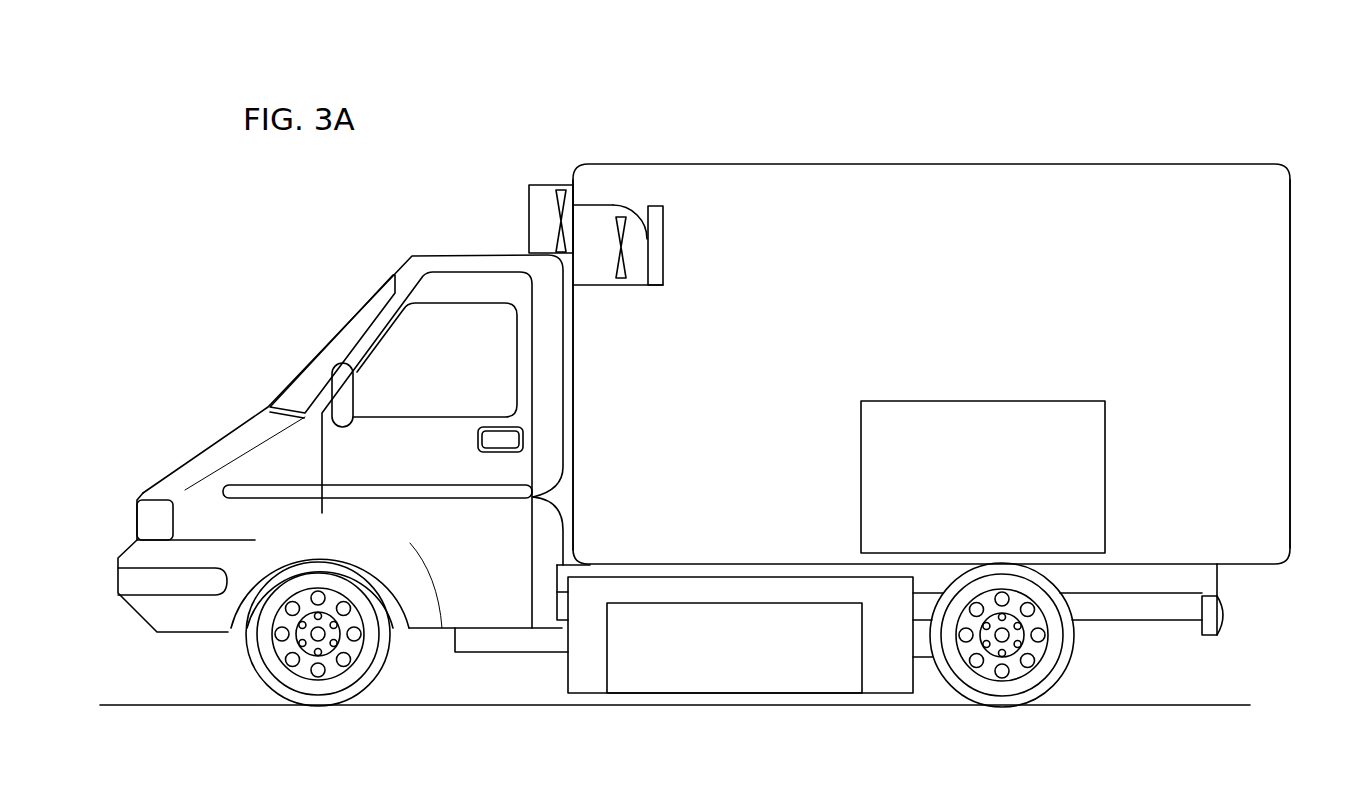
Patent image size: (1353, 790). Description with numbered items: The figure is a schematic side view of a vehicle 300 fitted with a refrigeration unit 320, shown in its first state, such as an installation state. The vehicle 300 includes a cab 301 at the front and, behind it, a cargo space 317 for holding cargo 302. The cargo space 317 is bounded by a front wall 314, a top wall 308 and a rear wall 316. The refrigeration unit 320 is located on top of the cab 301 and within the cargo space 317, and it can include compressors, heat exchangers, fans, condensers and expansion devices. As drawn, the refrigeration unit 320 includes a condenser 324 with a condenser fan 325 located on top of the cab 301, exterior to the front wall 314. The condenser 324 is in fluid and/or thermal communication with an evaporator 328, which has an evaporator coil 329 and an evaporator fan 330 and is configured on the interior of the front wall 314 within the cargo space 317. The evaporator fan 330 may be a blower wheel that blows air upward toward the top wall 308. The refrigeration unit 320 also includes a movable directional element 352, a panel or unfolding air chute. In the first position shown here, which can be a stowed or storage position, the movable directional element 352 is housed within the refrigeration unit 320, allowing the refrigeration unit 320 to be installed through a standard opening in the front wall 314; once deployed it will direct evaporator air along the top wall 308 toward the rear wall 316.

The vehicle 300 is at (993, 127).
The cab 301 is at (212, 458).
The cargo 302 is at (1001, 492).
The top wall 308 is at (835, 166).
The front wall 314 is at (575, 368).
The rear wall 316 is at (1290, 368).
The cargo space 317 is at (1048, 327).
The refrigeration unit 320 is at (634, 249).
The condenser 324 is at (540, 193).
The condenser fan 325 is at (559, 190).
The evaporator 328 is at (605, 275).
The evaporator coil 329 is at (665, 222).
The evaporator fan 330 is at (622, 280).
The movable directional element 352 is at (647, 236).